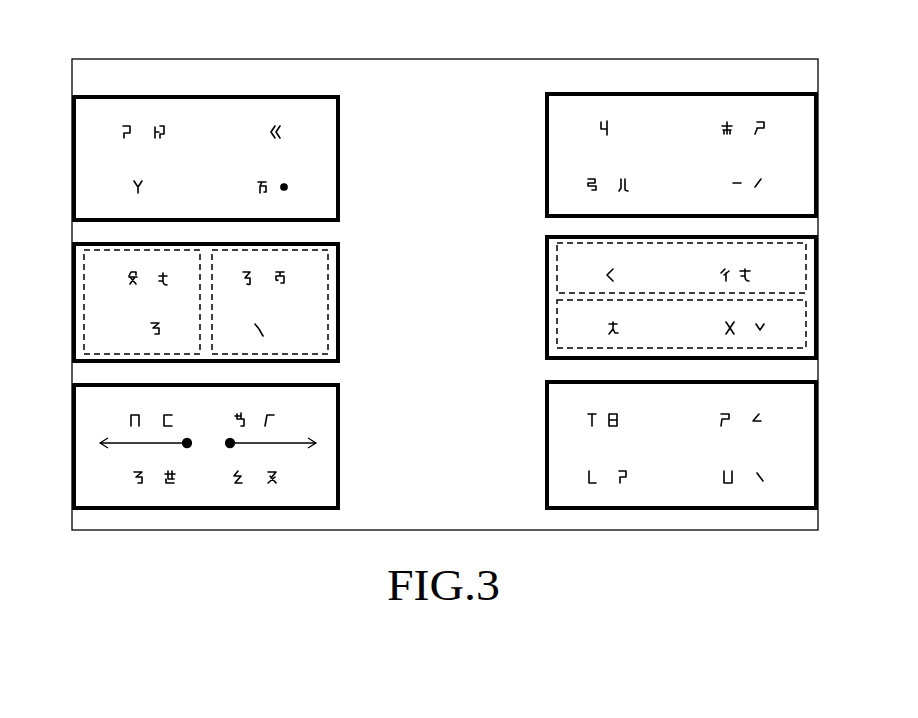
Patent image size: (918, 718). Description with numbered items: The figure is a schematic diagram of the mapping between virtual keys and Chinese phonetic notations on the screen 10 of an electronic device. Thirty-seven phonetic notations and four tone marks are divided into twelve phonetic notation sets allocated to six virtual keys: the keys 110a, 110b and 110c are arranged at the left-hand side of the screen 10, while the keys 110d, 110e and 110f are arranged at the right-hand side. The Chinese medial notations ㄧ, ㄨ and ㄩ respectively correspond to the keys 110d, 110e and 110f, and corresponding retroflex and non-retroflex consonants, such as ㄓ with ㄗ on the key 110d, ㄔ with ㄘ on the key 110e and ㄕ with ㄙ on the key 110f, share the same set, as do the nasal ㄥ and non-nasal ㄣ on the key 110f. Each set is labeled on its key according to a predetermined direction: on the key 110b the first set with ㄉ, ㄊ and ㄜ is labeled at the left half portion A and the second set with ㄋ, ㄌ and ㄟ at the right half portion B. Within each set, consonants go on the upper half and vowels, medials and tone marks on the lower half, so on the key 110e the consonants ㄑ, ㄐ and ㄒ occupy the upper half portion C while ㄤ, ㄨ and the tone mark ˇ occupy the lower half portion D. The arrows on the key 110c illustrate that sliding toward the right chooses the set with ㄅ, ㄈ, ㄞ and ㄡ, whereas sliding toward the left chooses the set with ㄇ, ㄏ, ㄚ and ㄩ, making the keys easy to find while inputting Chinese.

The screen 10 is at (364, 59).
The key 110a is at (341, 175).
The key 110b is at (341, 325).
The key 110c is at (341, 499).
The key 110d is at (818, 175).
The key 110e is at (818, 327).
The key 110f is at (818, 467).
The left half portion A is at (103, 318).
The right half portion B is at (307, 265).
The upper half portion C is at (792, 262).
The lower half portion D is at (787, 335).